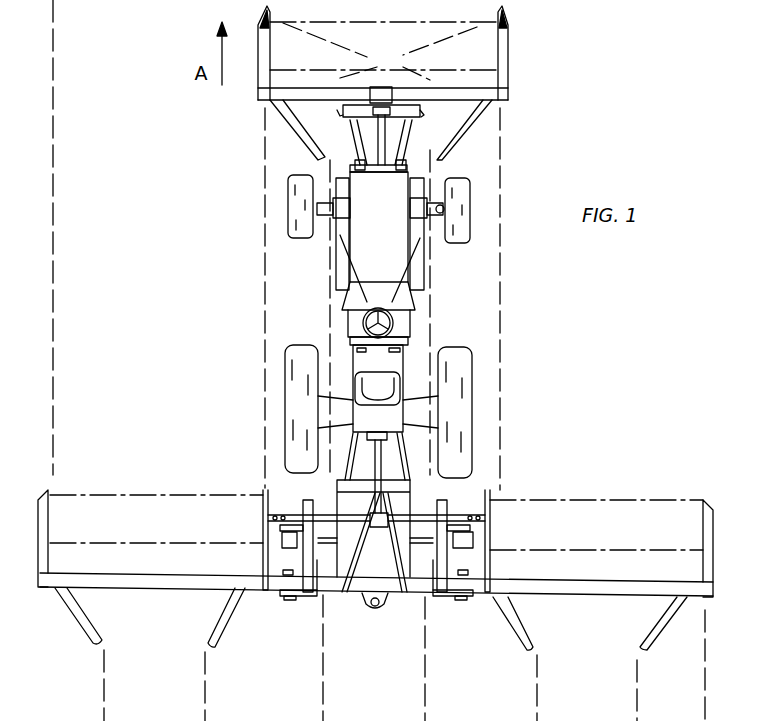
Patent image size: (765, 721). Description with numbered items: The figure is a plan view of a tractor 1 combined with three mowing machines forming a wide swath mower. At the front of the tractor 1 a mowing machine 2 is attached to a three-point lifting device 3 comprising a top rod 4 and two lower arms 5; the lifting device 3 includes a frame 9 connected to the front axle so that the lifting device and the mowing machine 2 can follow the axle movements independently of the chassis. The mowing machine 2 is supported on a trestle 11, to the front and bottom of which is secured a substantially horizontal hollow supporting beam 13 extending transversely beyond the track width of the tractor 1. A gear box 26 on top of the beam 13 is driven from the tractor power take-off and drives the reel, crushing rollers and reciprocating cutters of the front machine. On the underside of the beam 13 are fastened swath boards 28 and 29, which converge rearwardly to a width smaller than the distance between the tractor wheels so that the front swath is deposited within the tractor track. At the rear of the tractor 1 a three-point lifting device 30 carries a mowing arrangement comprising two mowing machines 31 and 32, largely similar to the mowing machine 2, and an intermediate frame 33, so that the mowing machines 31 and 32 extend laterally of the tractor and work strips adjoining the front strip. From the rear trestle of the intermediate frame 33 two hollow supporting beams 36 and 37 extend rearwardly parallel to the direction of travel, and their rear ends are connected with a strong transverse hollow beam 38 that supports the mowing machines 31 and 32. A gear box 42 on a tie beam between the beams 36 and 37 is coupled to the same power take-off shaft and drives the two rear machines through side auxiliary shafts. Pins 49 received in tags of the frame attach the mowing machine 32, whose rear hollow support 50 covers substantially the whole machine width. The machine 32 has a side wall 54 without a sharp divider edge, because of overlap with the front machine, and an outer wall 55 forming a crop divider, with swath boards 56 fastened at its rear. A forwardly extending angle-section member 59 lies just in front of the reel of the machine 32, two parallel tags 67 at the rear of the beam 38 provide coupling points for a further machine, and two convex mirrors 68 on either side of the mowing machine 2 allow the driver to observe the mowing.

The tractor 1 is at (336, 300).
The mowing machine 2 is at (512, 83).
The three-point lifting device 3 is at (389, 151).
The top rod 4 is at (378, 172).
The lower arms 5 is at (352, 137).
The frame 9 is at (416, 175).
The trestle 11 is at (362, 115).
The supporting beam 13 is at (443, 104).
The gear box 26 is at (391, 87).
The swath board 28 is at (317, 168).
The swath board 29 is at (440, 160).
The three-point lifting device 30 is at (372, 448).
The mowing machine 31 is at (173, 492).
The mowing machine 32 is at (624, 498).
The intermediate frame 33 is at (333, 594).
The supporting beam 36 is at (422, 553).
The supporting beam 37 is at (340, 547).
The hollow beam 38 is at (418, 594).
The gear box 42 is at (378, 527).
The pins 49 is at (288, 600).
The hollow support 50 is at (152, 590).
The wall 54 is at (263, 492).
The wall 55 is at (48, 492).
The swath boards 56 is at (97, 628).
The angle-section member 59 is at (307, 498).
The tags 67 is at (376, 612).
The mirrors 68 is at (264, 26).